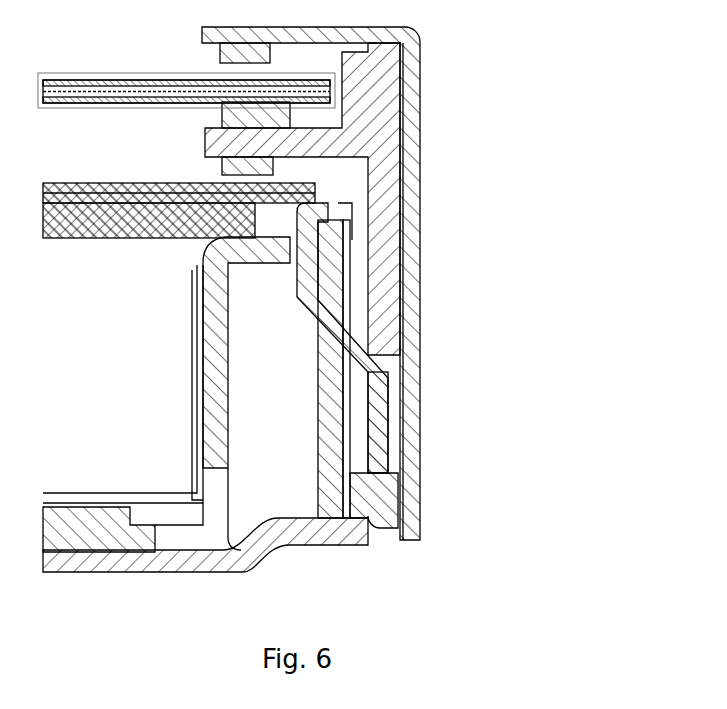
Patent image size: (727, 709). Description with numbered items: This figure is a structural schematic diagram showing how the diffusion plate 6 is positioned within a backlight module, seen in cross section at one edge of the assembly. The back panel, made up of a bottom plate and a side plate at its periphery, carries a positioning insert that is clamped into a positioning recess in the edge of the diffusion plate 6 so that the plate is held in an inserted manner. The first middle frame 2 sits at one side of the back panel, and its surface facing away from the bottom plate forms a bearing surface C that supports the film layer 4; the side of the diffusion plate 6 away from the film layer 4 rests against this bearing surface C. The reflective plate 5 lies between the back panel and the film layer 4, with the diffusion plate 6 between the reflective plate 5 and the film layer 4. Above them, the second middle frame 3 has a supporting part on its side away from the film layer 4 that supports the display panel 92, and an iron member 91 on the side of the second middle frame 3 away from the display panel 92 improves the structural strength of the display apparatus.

The iron member 91 is at (405, 72).
The display panel 92 is at (111, 75).
The second middle frame 3 is at (378, 146).
The film layer 4 is at (60, 191).
The diffusion plate 6 is at (140, 233).
The first middle frame 2 is at (338, 477).
The bearing surface C is at (232, 245).
The reflective plate 5 is at (135, 497).